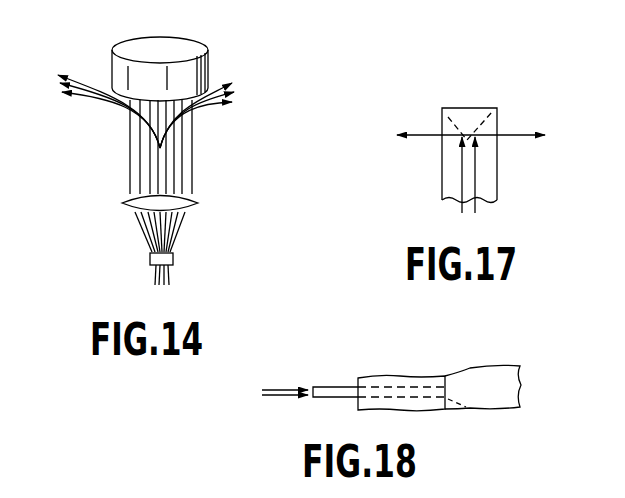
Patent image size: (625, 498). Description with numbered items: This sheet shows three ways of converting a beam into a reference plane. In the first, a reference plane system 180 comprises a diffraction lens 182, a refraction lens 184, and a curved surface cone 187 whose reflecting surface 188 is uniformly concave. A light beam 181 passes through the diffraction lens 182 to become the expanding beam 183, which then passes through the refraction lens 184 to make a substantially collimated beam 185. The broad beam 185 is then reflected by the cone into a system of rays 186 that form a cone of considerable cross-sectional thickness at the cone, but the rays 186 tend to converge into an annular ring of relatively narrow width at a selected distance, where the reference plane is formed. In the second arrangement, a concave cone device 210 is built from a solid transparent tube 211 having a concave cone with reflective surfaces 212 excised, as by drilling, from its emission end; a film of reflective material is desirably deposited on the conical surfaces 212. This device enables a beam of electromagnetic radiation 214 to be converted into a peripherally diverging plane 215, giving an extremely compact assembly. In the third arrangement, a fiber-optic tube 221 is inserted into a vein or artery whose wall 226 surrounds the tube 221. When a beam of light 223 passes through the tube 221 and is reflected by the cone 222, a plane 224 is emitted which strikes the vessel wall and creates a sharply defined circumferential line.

In FIG. 14, the reference plane system 180 is at (264, 187).
In FIG. 14, the light beam 181 is at (170, 275).
In FIG. 14, the diffraction lens 182 is at (173, 258).
In FIG. 14, the expanding beam 183 is at (183, 228).
In FIG. 14, the refraction lens 184 is at (198, 202).
In FIG. 14, the collimated beam 185 is at (192, 160).
In FIG. 14, the rays 186 is at (87, 98).
In FIG. 14, the curved surface cone 187 is at (212, 67).
In FIG. 14, the reflecting surface 188 is at (166, 112).
In FIG. 17, the concave cone device 210 is at (507, 105).
In FIG. 17, the solid transparent tube 211 is at (448, 175).
In FIG. 17, the reflective surfaces 212 is at (458, 112).
In FIG. 17, the beam of electromagnetic radiation 214 is at (462, 183).
In FIG. 17, the peripherally diverging plane 215 is at (423, 133).
In FIG. 18, the fiber-optic tube 221 is at (337, 387).
In FIG. 18, the cone 222 is at (468, 410).
In FIG. 18, the beam of light 223 is at (277, 387).
In FIG. 18, the plane 224 is at (448, 382).
In FIG. 18, the wall 226 is at (415, 373).